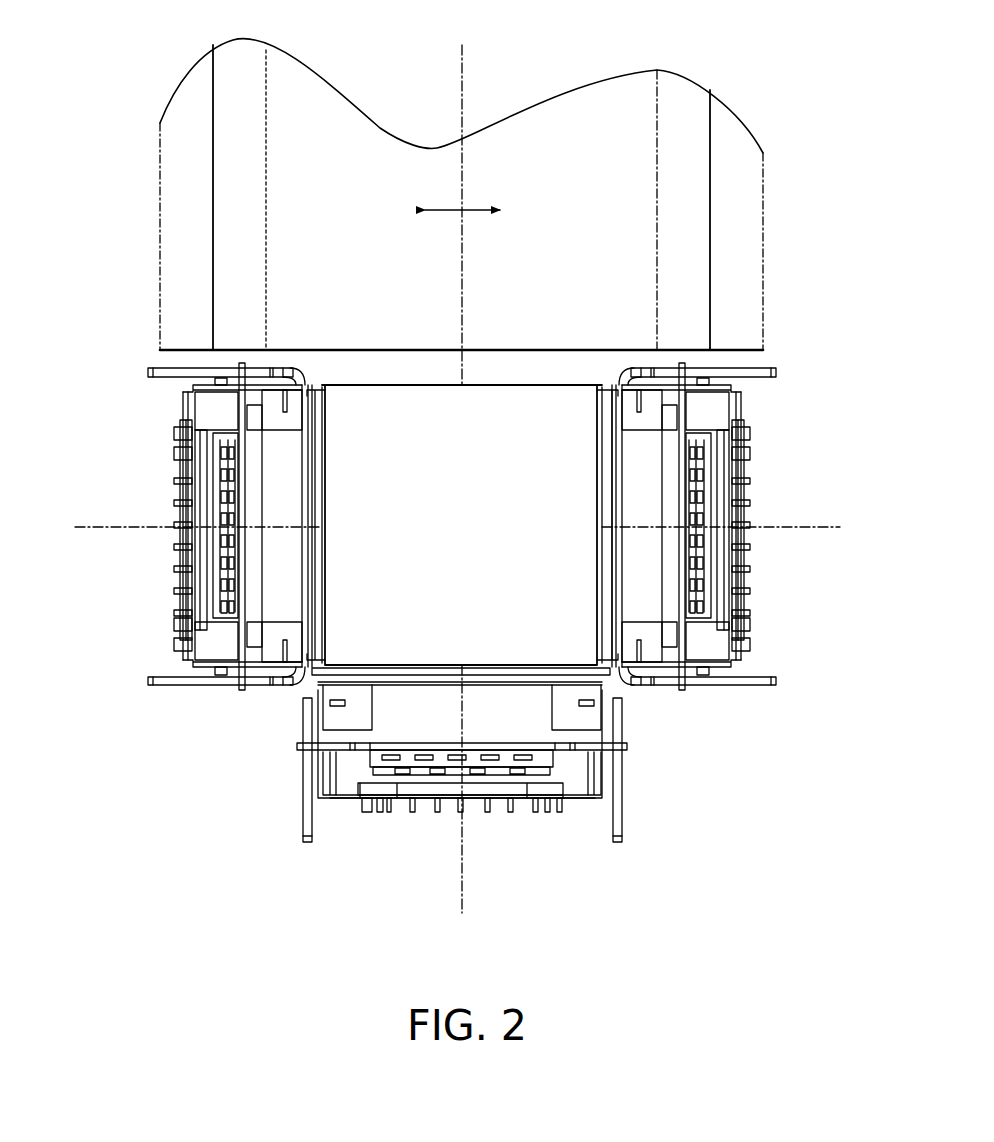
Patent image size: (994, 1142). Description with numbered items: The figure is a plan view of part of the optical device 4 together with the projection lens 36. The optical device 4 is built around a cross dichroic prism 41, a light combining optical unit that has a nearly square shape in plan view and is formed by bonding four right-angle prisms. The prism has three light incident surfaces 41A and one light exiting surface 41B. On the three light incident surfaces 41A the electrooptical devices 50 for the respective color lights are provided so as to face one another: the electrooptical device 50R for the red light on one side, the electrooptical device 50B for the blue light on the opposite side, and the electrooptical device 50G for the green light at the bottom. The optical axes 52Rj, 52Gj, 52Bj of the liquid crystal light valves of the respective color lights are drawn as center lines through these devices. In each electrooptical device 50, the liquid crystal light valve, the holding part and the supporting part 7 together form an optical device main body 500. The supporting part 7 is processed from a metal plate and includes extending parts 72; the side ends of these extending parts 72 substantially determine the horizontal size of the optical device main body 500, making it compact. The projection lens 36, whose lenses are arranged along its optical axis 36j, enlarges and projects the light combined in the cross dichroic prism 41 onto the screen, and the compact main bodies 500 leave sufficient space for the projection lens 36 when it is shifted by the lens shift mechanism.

The projection lens 36 is at (802, 197).
The optical axis 36j is at (464, 70).
The optical device 4 is at (792, 457).
The cross dichroic prism 41 is at (507, 382).
The light incident surface 41A is at (606, 497).
The light exiting surface 41B is at (404, 376).
The electrooptical device 50 is at (463, 643).
The electrooptical device for R-light 50R is at (89, 460).
The electrooptical device for B-light 50B is at (779, 605).
The electrooptical device for G-light 50G is at (379, 837).
The optical device main body 500 is at (288, 763).
The optical axis 52Rj is at (95, 530).
The optical axis 52Bj is at (836, 530).
The optical axis 52Gj is at (465, 887).
The supporting part 7 is at (470, 605).
The extending part 72 is at (163, 689).